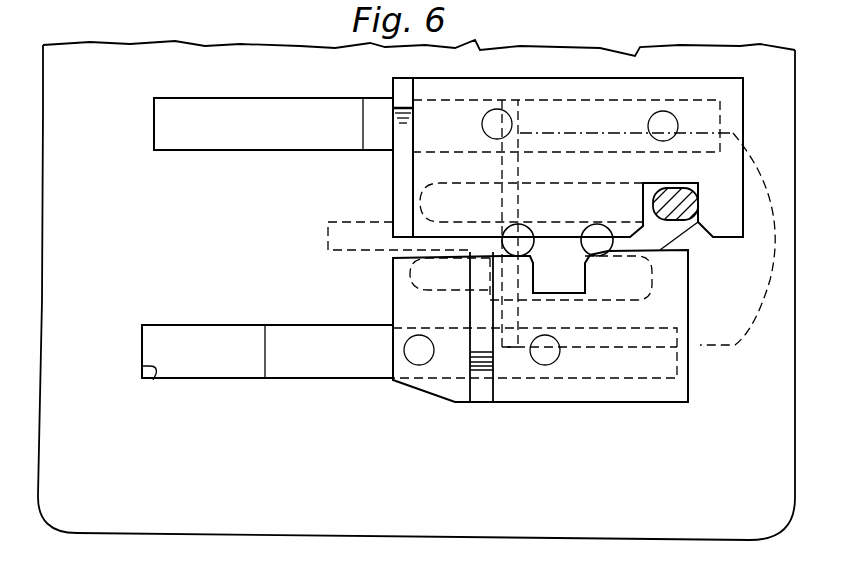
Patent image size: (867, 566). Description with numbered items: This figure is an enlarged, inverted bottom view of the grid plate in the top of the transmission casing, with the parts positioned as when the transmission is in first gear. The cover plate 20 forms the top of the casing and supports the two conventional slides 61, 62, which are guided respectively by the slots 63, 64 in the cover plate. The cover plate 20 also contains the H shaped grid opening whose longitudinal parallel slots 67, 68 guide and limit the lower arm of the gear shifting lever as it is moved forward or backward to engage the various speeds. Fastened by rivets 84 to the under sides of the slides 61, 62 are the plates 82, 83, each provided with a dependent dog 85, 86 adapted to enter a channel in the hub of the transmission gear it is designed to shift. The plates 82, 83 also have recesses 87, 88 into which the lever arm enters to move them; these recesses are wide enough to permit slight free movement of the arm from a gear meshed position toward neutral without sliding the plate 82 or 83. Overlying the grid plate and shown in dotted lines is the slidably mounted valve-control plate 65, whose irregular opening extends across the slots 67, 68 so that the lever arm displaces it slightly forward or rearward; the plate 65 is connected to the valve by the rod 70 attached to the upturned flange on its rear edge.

The cover plate 20 is at (630, 528).
The slide 61 is at (376, 118).
The slide 62 is at (264, 350).
The slot 63 is at (222, 104).
The slot 64 is at (154, 380).
The plate 65 is at (708, 348).
The longitudinal parallel slot 67 is at (410, 284).
The longitudinal parallel slot 68 is at (435, 188).
The rod 70 is at (362, 220).
The plate 82 is at (560, 56).
The plate 83 is at (572, 404).
The rivets 84 is at (497, 122).
The dependent dog 85 is at (398, 86).
The dependent dog 86 is at (484, 388).
The recess 87 is at (655, 193).
The recess 88 is at (578, 282).